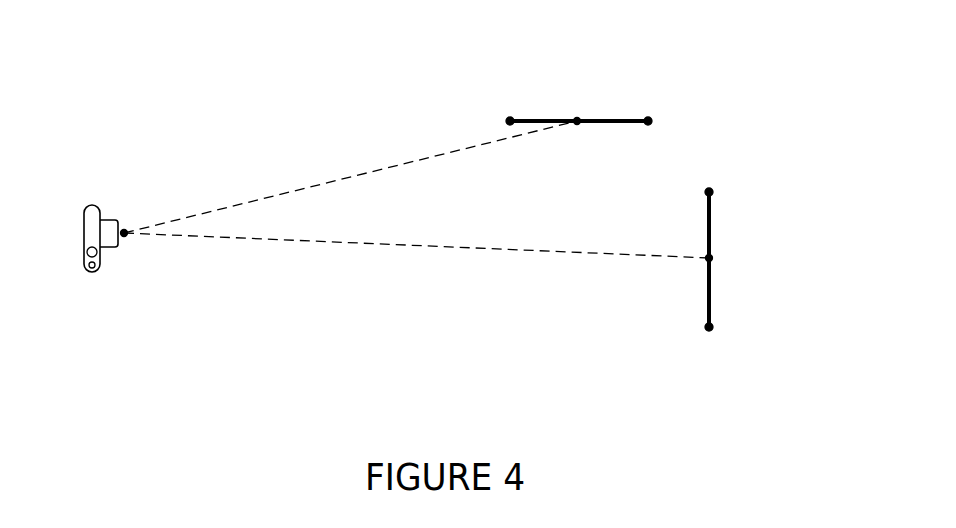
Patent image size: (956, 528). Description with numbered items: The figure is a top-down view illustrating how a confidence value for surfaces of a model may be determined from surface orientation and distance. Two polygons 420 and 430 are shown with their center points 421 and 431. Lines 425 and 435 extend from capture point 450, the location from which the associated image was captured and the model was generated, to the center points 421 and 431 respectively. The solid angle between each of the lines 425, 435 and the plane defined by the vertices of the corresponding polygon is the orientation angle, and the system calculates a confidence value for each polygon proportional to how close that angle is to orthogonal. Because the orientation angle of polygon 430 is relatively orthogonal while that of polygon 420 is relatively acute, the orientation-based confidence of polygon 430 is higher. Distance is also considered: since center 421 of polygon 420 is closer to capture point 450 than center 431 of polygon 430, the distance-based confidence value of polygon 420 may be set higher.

The polygon 420 is at (613, 121).
The center point 421 is at (573, 119).
The line 425 is at (315, 185).
The polygon 430 is at (712, 206).
The center point 431 is at (712, 258).
The line 435 is at (343, 243).
The capture point 450 is at (126, 231).